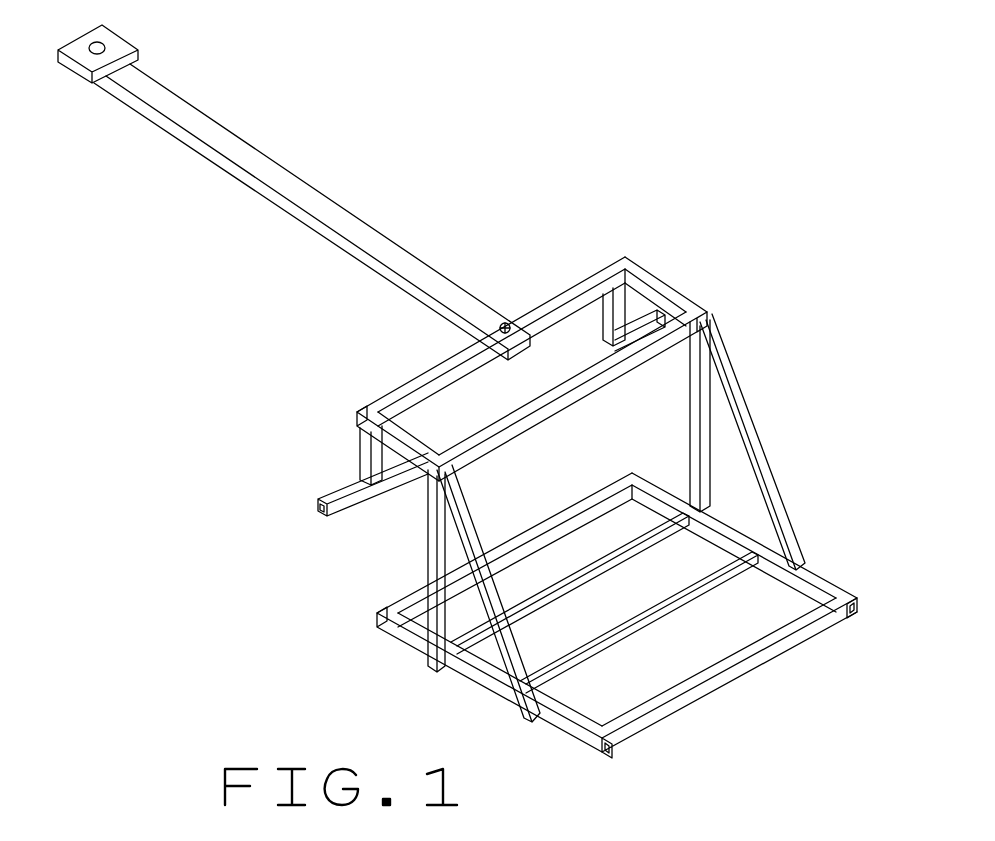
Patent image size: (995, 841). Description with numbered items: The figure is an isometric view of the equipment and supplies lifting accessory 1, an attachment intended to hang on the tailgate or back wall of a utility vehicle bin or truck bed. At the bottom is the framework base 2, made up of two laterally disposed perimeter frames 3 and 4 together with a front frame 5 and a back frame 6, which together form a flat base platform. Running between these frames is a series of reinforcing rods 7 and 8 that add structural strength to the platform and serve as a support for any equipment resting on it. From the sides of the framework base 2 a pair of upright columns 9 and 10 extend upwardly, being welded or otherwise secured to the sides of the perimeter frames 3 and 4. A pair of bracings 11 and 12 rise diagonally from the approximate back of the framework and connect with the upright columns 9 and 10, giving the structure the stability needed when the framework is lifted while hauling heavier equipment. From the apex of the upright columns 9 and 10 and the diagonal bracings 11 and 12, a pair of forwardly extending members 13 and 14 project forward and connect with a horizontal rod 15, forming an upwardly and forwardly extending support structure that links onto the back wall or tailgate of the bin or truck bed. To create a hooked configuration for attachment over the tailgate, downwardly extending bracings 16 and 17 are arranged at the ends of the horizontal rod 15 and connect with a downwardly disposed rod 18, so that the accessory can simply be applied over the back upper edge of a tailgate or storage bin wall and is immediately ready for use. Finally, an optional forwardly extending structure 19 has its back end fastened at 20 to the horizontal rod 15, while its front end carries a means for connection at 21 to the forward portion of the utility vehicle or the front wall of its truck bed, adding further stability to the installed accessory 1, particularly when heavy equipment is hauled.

The accessory 1 is at (515, 191).
The framework base 2 is at (830, 566).
The perimeter frame 3 is at (577, 733).
The perimeter frame 4 is at (647, 487).
The front frame 5 is at (557, 507).
The back frame 6 is at (777, 657).
The reinforcing rod 7 is at (613, 573).
The reinforcing rod 8 is at (668, 615).
The upright column 9 is at (430, 557).
The upright column 10 is at (690, 352).
The bracing 11 is at (517, 657).
The bracing 12 is at (780, 510).
The forwardly extending member 13 is at (414, 420).
The forwardly extending member 14 is at (650, 295).
The horizontal rod 15 is at (578, 290).
The downwardly extending bracing 16 is at (362, 455).
The downwardly extending bracing 17 is at (605, 322).
The downwardly disposed rod 18 is at (505, 420).
The forwardly extending structure 19 is at (288, 183).
The fastening 20 is at (501, 322).
The means for connection 21 is at (110, 44).